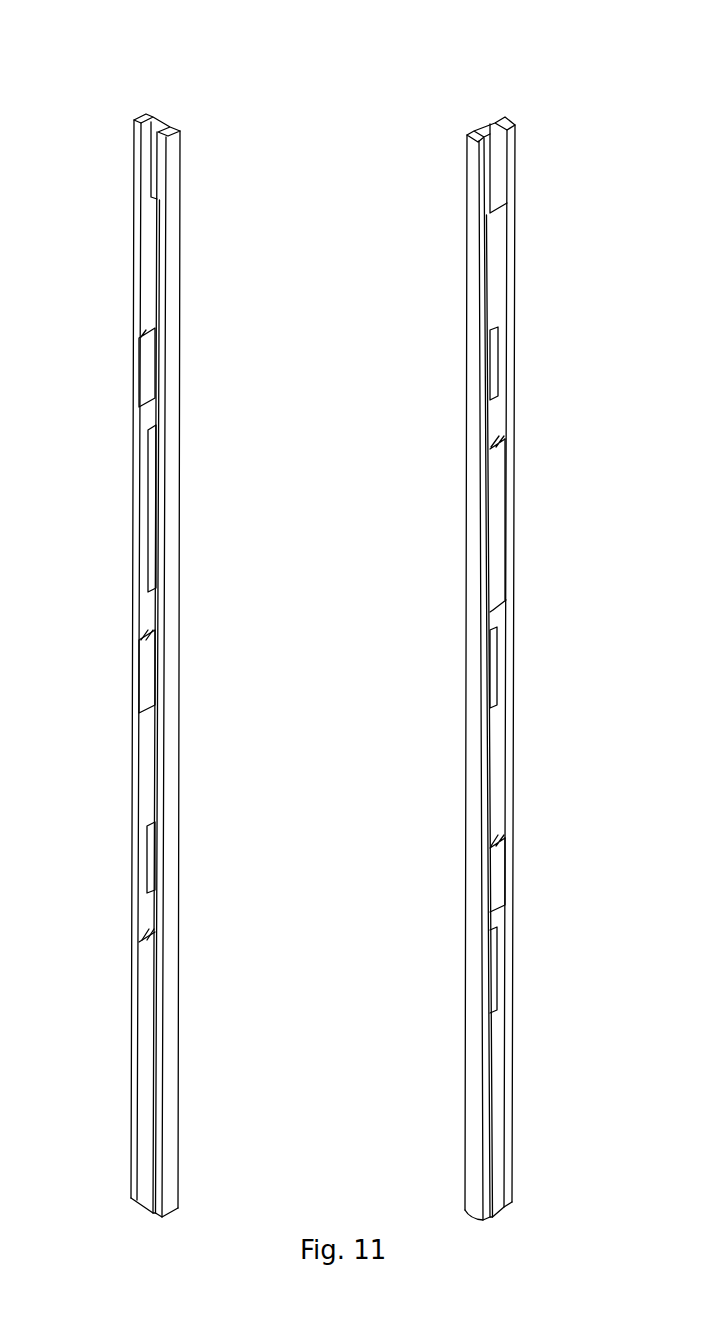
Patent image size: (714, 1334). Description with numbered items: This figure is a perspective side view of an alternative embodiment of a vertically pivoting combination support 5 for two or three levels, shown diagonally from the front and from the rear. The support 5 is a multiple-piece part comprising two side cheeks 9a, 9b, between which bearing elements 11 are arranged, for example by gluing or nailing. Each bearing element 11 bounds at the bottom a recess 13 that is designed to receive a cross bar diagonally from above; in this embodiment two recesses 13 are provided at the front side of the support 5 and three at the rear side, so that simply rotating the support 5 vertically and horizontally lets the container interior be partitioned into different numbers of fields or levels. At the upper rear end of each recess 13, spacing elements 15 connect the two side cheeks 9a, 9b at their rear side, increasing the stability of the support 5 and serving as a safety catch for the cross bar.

The support 5 is at (313, 619).
The side cheek 9a is at (177, 540).
The side cheek 9b is at (135, 752).
The bearing element 11 is at (147, 367).
The recess 13 is at (150, 273).
The spacing element 15 is at (148, 498).